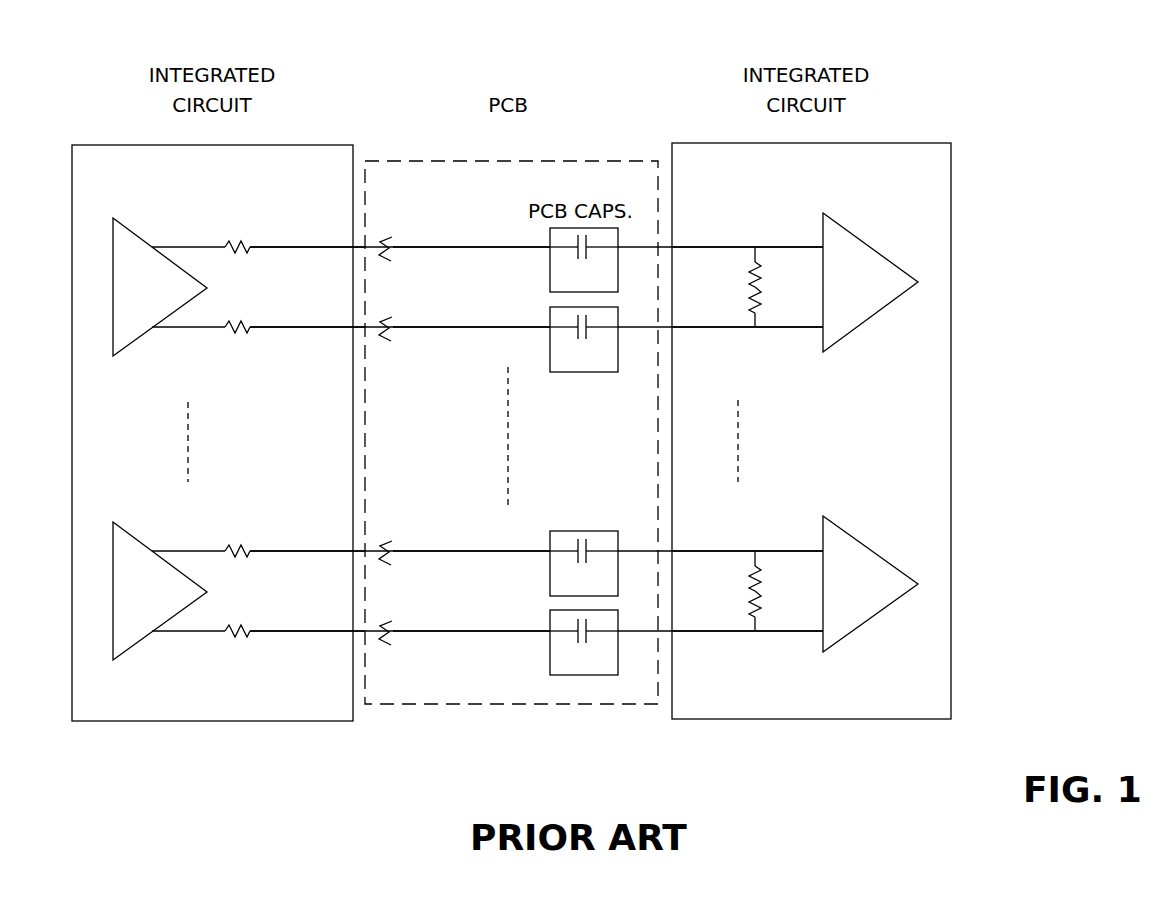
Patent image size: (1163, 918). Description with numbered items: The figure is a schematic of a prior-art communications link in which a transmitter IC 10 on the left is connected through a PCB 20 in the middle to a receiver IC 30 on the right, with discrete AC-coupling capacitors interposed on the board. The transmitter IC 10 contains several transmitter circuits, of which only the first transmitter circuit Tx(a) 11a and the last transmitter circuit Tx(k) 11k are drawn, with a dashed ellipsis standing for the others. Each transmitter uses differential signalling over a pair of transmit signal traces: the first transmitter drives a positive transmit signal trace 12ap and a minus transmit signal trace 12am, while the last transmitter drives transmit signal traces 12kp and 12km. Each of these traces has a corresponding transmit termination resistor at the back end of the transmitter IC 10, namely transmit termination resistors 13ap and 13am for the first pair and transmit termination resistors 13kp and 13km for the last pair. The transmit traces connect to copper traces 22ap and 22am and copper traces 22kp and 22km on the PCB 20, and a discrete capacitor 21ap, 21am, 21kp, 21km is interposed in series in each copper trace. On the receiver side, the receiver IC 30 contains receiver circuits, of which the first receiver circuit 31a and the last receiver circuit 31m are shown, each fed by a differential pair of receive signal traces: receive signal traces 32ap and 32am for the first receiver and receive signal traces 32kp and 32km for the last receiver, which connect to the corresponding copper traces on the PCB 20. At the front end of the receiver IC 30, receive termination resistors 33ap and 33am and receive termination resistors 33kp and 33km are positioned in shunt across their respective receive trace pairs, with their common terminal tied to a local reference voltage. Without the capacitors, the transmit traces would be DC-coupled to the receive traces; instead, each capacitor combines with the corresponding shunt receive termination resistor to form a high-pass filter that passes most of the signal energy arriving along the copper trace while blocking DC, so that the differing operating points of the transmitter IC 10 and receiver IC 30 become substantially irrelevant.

The transmitter IC 10 is at (212, 433).
The PCB 20 is at (511, 432).
The receiver IC 30 is at (811, 431).
The transmitter circuit Tx(a) 11a is at (160, 287).
The transmitter circuit Tx(k) 11k is at (160, 591).
The transmit signal trace Tx(a)p 12ap is at (243, 242).
The transmit signal trace Tx(a)m 12am is at (235, 333).
The transmit signal trace Tx(k)p 12kp is at (243, 546).
The transmit signal trace Tx(k)m 12km is at (235, 637).
The transmit termination resistor RTXap 13ap is at (335, 246).
The transmit termination resistor RTXam 13am is at (258, 334).
The transmit termination resistor RTXkp 13kp is at (333, 550).
The transmit termination resistor RTXkm 13km is at (258, 638).
The discrete capacitor 21ap is at (584, 260).
The discrete capacitor 21am is at (584, 339).
The discrete capacitor 21kp is at (584, 563).
The discrete capacitor 21km is at (584, 642).
The copper trace 22ap is at (418, 247).
The copper trace 22am is at (410, 327).
The copper trace 22kp is at (435, 551).
The copper trace 22km is at (440, 631).
The receiver circuit Rx(1) 31a is at (870, 282).
The receiver circuit Rx(k) 31m is at (870, 584).
The receive signal trace Rx(a)p 32ap is at (733, 245).
The receive signal trace Rx(a)m 32am is at (732, 328).
The receive signal trace Rx(k)p 32kp is at (738, 549).
The receive signal trace Rx(k)m 32km is at (738, 632).
The receive termination resistor RRXap 33ap is at (760, 262).
The receive termination resistor RRXam 33am is at (760, 296).
The receive termination resistor RRXkp 33kp is at (763, 566).
The receive termination resistor RRXkm 33km is at (762, 600).